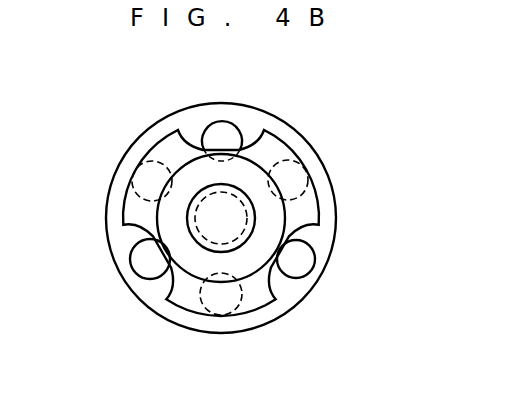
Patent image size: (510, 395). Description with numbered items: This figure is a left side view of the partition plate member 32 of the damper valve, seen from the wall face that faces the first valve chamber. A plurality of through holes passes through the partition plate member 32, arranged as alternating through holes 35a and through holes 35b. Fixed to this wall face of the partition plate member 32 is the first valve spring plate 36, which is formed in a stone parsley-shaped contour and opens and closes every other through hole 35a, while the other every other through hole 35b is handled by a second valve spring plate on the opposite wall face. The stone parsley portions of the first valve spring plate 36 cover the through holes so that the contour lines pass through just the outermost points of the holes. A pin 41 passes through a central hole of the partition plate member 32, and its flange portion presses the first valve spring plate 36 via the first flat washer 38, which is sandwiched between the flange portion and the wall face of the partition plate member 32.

The partition plate member 32 is at (155, 312).
The first valve spring plate 36 is at (172, 143).
The first flat washer 38 is at (247, 171).
The pin 41 is at (246, 223).
The through hole 35a is at (138, 186).
The through hole 35b is at (223, 125).